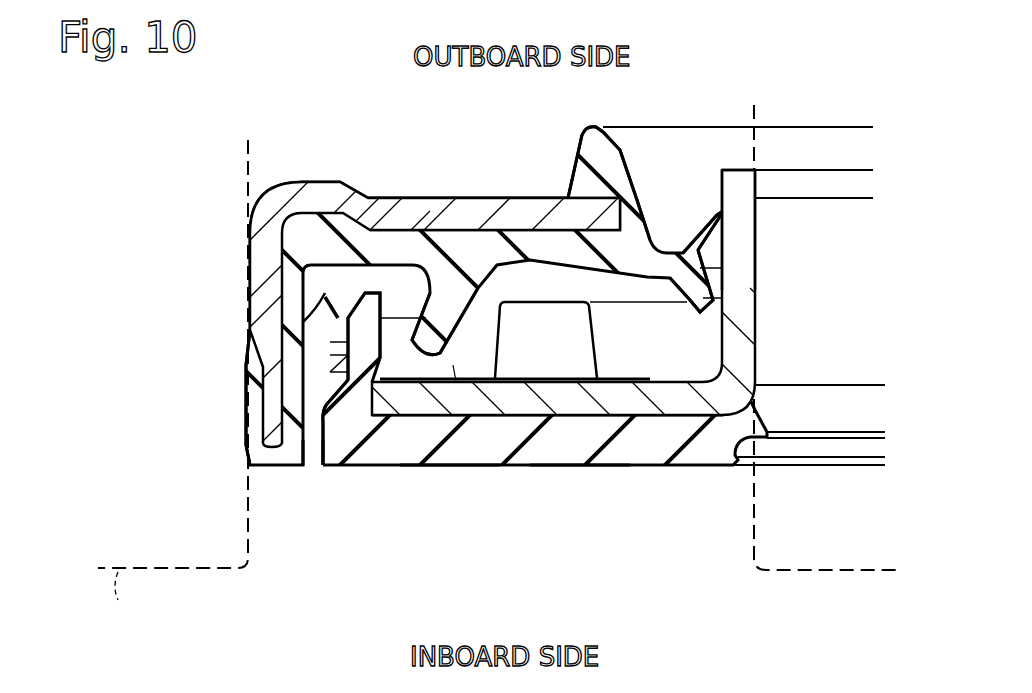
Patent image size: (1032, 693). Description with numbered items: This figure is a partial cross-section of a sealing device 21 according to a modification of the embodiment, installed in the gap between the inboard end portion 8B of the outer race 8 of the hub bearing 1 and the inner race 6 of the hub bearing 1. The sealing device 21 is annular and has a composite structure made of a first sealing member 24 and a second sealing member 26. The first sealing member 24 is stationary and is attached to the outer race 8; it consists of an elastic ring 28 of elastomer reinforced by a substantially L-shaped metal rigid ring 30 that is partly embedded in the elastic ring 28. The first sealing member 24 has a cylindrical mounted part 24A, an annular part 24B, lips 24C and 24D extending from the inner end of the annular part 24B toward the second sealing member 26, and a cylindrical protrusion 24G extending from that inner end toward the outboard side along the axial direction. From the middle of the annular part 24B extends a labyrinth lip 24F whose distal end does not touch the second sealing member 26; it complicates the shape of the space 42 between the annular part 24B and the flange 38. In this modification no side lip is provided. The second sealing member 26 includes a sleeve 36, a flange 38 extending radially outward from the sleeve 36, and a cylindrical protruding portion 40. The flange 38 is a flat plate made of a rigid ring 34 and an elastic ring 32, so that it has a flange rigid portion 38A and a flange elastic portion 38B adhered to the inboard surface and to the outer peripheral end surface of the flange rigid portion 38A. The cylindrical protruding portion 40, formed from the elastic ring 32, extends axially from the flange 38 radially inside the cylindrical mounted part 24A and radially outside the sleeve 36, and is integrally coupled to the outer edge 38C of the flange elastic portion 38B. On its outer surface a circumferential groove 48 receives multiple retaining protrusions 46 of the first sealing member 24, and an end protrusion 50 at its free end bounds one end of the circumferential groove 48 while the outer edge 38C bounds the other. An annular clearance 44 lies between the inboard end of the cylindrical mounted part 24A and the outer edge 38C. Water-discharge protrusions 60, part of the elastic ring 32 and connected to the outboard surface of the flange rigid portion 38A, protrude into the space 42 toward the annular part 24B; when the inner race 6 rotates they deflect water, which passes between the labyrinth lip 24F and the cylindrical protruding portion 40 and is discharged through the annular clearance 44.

The hub bearing 1 is at (168, 393).
The inner race 6 is at (780, 570).
The outer race 8 is at (168, 385).
The end portion 8B is at (104, 601).
The sealing device 21 is at (450, 346).
The first sealing member 24 is at (450, 346).
The cylindrical mounted part 24A is at (257, 452).
The annular part 24B is at (478, 210).
The lip 24C is at (702, 227).
The lip 24D is at (688, 302).
The labyrinth lip 24F is at (405, 265).
The cylindrical protrusion 24G is at (580, 152).
The second sealing member 26 is at (470, 557).
The elastic ring 28 is at (302, 242).
The rigid ring 30 is at (330, 197).
The elastic ring 32 is at (641, 392).
The rigid ring 34 is at (747, 328).
The sleeve 36 is at (745, 303).
The flange 38 is at (567, 393).
The flange rigid portion 38A is at (570, 405).
The flange elastic portion 38B is at (443, 443).
The outer edge 38C is at (338, 453).
The cylindrical protruding portion 40 is at (383, 410).
The space 42 is at (458, 392).
The annular clearance 44 is at (310, 452).
The retaining protrusions 46 is at (313, 325).
The circumferential groove 48 is at (313, 365).
The end protrusion 50 is at (307, 298).
The water-discharge protrusions 60 is at (537, 303).